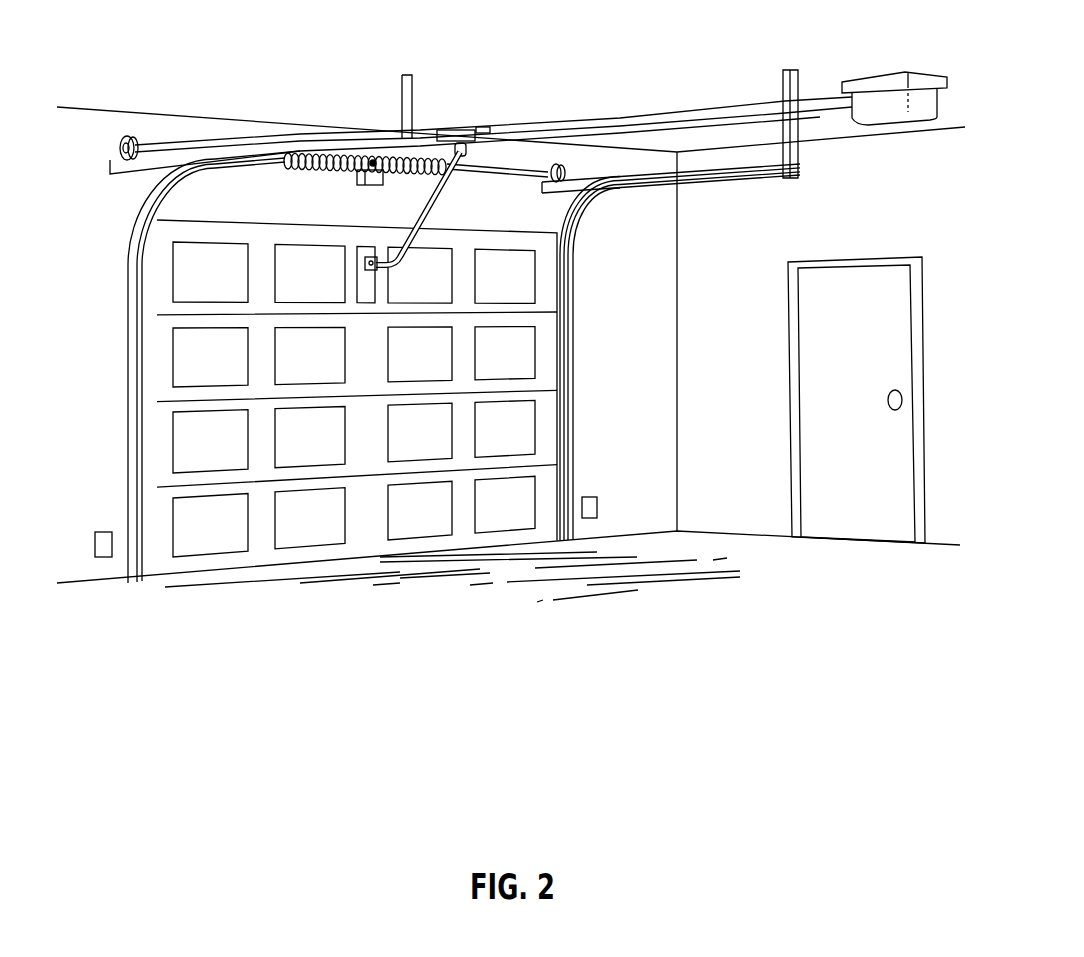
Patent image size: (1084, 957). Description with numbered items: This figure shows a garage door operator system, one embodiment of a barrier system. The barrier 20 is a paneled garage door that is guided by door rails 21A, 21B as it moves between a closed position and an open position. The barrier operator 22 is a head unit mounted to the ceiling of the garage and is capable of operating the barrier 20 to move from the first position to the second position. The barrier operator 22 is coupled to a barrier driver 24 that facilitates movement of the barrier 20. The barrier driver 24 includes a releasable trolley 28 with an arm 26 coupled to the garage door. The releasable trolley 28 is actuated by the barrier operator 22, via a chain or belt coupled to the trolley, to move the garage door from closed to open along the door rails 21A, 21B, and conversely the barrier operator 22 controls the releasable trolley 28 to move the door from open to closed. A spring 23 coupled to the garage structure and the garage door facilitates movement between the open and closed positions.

The barrier 20 is at (260, 240).
The door rail 21A is at (132, 415).
The door rail 21B is at (572, 406).
The barrier operator 22 is at (923, 100).
The spring 23 is at (325, 155).
The barrier driver 24 is at (601, 127).
The arm 26 is at (437, 203).
The releasable trolley 28 is at (457, 130).